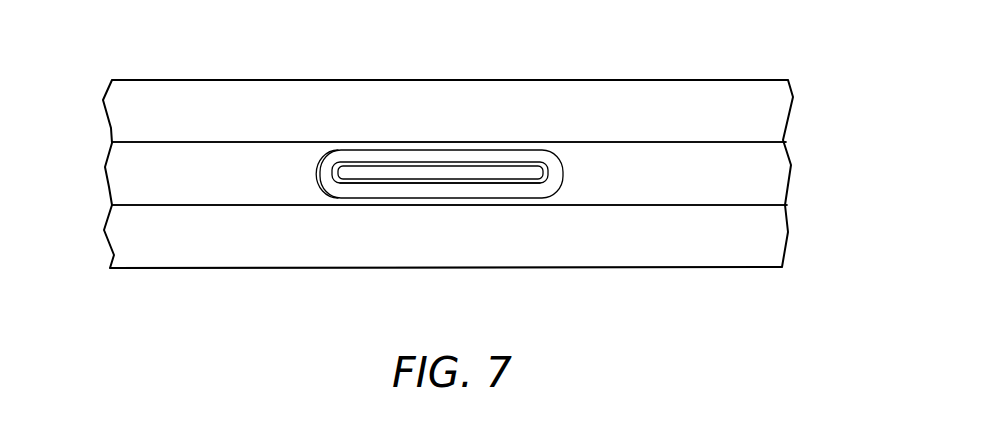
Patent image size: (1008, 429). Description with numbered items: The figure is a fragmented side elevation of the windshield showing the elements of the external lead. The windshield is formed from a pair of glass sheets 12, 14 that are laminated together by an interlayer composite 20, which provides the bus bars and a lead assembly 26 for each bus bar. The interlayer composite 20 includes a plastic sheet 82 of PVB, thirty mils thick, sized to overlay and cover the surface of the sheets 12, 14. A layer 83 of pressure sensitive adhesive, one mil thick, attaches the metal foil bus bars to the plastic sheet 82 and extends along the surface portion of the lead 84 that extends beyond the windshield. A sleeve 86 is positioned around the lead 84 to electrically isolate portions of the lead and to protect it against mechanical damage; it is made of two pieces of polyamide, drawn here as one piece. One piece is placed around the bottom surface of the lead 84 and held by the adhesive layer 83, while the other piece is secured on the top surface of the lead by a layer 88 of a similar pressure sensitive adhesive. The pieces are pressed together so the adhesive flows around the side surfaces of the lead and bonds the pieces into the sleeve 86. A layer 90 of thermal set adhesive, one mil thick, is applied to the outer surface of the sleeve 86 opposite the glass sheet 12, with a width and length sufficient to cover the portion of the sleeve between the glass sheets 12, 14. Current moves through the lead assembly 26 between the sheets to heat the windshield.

The glass sheet 12 is at (624, 268).
The glass sheet 14 is at (677, 80).
The interlayer composite 20 is at (804, 173).
The lead assembly 26 is at (308, 219).
The plastic sheet 82 is at (108, 190).
The layer of pressure sensitive adhesive 83 is at (366, 186).
The lead 84 is at (508, 174).
The sleeve 86 is at (320, 175).
The layer of pressure sensitive adhesive 88 is at (464, 163).
The layer of thermal set adhesive 90 is at (402, 148).